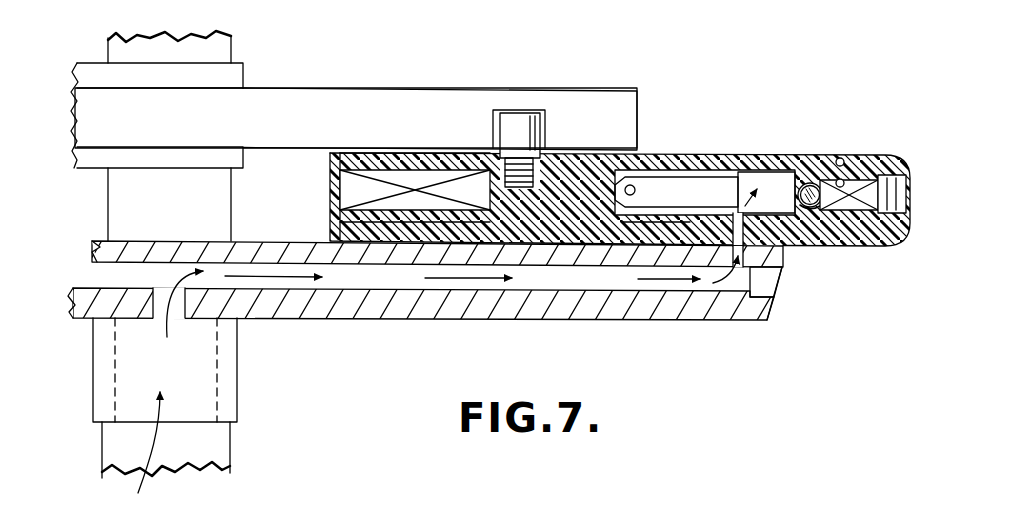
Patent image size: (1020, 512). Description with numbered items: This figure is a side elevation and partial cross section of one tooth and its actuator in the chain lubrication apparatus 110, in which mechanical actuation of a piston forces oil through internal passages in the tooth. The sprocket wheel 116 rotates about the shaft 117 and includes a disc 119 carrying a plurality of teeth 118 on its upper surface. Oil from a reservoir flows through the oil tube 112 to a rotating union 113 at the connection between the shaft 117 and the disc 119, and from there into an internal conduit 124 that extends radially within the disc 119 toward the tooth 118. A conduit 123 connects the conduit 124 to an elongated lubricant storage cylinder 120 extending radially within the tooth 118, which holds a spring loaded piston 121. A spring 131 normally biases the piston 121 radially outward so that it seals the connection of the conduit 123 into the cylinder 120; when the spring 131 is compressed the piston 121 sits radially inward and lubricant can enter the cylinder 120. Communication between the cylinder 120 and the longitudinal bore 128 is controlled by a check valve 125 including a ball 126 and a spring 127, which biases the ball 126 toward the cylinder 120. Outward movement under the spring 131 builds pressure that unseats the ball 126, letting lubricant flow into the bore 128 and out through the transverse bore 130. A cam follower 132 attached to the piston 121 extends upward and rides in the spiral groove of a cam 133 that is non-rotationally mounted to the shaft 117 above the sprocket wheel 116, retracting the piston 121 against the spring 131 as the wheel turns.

The chain lubrication apparatus 110 is at (800, 112).
The oil tube 112 is at (220, 452).
The rotating union 113 is at (238, 371).
The sprocket wheel 116 is at (728, 323).
The shaft 117 is at (218, 53).
The tooth 118 is at (737, 135).
The disc 119 is at (497, 320).
The lubricant storage cylinder 120 is at (763, 176).
The piston 121 is at (673, 185).
The conduit 123 is at (748, 260).
The internal conduit 124 is at (608, 278).
The check valve 125 is at (815, 216).
The ball 126 is at (810, 185).
The spring 127 is at (880, 215).
The longitudinal bore 128 is at (850, 212).
The transverse bore 130 is at (841, 180).
The spring 131 is at (370, 172).
The cam follower 132 is at (510, 122).
The cam 133 is at (575, 72).